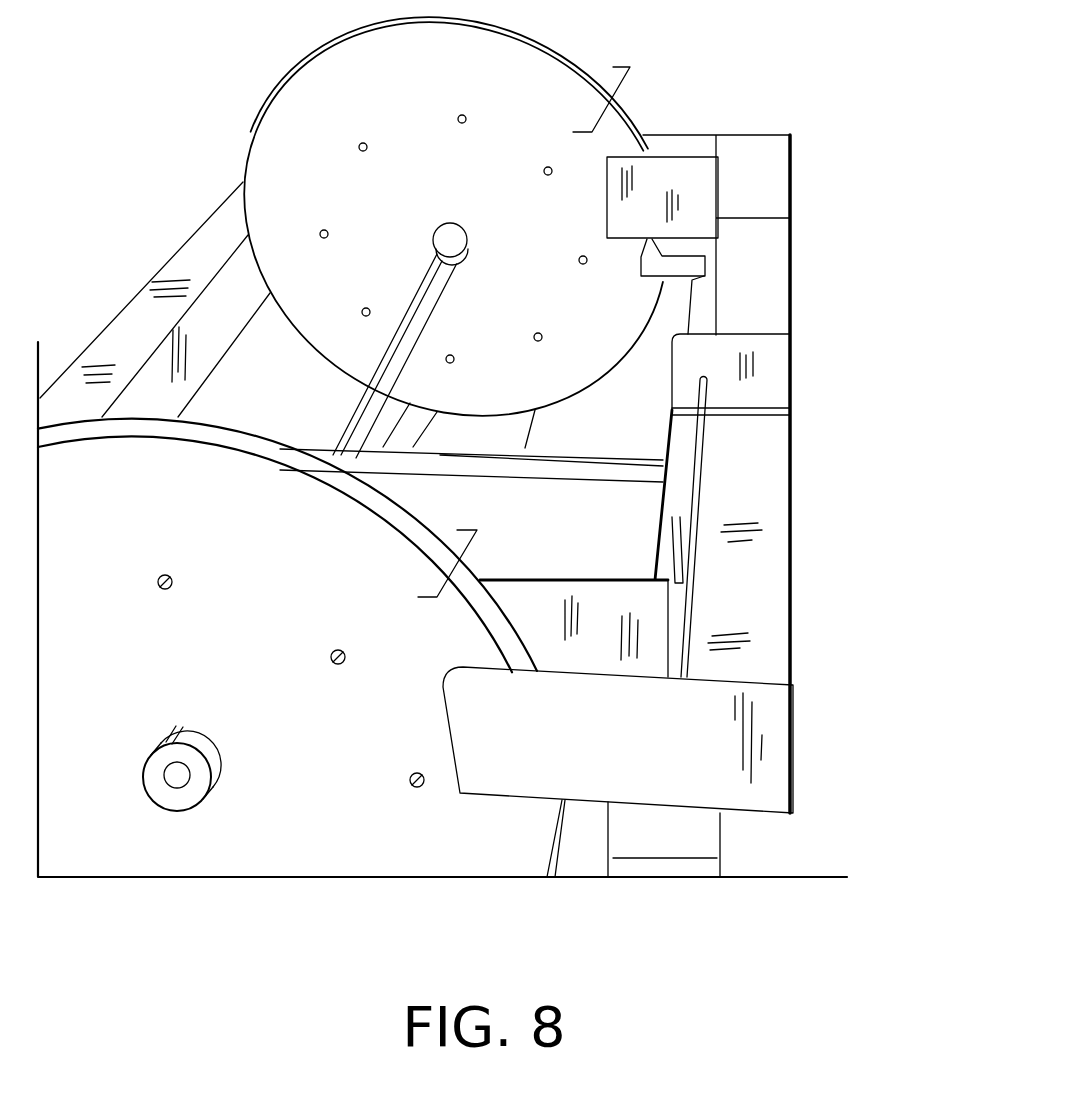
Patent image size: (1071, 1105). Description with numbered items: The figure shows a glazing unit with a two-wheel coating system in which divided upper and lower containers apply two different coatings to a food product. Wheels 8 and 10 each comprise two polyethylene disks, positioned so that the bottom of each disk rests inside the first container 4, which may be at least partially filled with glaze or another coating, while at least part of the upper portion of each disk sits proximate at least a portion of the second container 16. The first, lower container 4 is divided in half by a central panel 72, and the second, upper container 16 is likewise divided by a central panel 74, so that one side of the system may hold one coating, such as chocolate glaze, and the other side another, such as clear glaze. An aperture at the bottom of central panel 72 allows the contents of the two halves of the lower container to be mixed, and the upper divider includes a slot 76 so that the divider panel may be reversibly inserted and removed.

The first container 4 is at (643, 345).
The wheel 8 is at (618, 97).
The wheel 10 is at (450, 555).
The second container 16 is at (750, 615).
The central panel 72 is at (617, 530).
The central panel 74 is at (763, 352).
The slot 76 is at (747, 410).